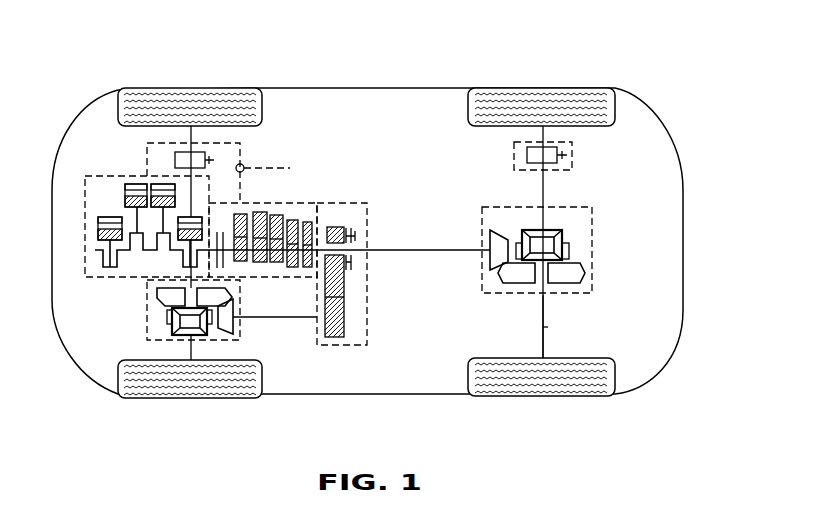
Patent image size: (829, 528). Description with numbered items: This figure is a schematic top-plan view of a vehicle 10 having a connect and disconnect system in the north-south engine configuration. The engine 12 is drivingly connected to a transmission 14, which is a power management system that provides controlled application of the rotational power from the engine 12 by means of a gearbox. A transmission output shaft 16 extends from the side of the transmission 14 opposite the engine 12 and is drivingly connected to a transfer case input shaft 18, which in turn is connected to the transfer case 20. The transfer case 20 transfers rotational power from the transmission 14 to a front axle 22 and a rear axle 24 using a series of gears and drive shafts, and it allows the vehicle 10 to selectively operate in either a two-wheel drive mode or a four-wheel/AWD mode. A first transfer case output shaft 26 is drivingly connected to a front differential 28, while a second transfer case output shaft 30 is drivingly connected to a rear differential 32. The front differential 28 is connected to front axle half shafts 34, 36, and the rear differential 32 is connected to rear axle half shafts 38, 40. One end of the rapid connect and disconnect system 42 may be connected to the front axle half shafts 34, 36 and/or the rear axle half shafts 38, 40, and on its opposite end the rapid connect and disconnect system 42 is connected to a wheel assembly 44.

The vehicle 10 is at (392, 58).
The engine 12 is at (108, 226).
The transmission 14 is at (272, 203).
The transmission output shaft 16 is at (325, 255).
The transfer case input shaft 18 is at (325, 338).
The transfer case 20 is at (372, 277).
The front axle 22 is at (122, 197).
The rear axle 24 is at (565, 318).
The first transfer case output shaft 26 is at (280, 318).
The front differential 28 is at (165, 316).
The second transfer case output shaft 30 is at (388, 250).
The rear differential 32 is at (592, 230).
The front axle half shaft 34 is at (190, 345).
The front axle half shaft 36 is at (187, 284).
The rear axle half shaft 38 is at (543, 218).
The rear axle half shaft 40 is at (543, 327).
The rapid connect and disconnect system 42 is at (240, 145).
The wheel assembly 44 is at (146, 136).